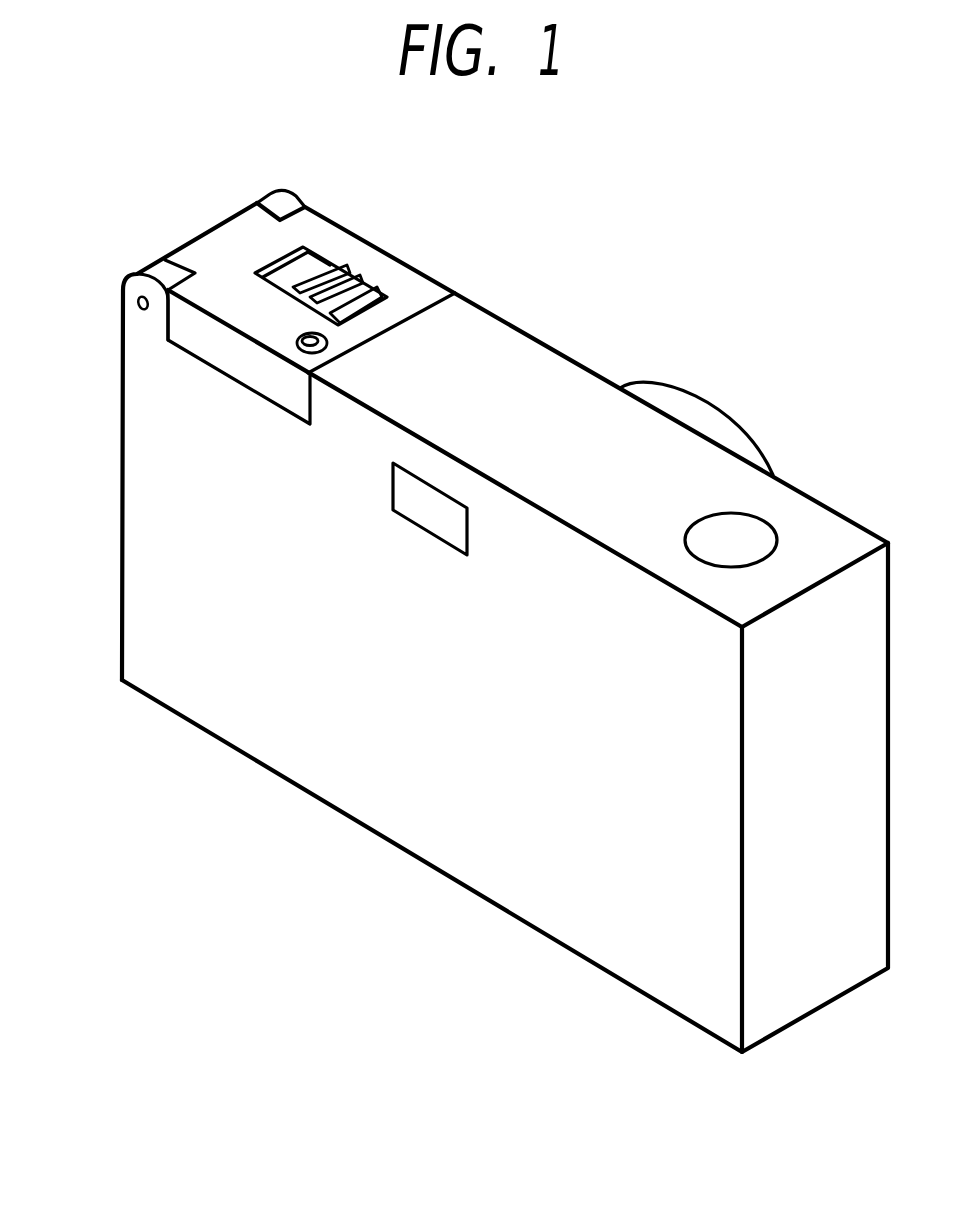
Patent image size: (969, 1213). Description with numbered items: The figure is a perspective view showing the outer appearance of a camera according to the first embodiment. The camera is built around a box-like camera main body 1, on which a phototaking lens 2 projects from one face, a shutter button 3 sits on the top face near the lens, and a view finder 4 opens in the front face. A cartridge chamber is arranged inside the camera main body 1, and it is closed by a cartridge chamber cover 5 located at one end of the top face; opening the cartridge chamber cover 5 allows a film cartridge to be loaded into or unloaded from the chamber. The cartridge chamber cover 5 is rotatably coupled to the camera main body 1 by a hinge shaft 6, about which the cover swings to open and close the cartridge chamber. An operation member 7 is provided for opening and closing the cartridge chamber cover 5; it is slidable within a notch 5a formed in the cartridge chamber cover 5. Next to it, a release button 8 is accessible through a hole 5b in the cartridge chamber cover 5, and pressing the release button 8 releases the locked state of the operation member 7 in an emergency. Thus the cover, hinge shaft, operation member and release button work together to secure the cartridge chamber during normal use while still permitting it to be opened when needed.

The camera main body 1 is at (167, 460).
The phototaking lens 2 is at (713, 403).
The shutter button 3 is at (760, 538).
The view finder 4 is at (440, 520).
The cartridge chamber cover 5 is at (377, 262).
The notch 5a is at (280, 263).
The hole 5b is at (297, 342).
The hinge shaft 6 is at (137, 302).
The operation member 7 is at (330, 262).
The release button 8 is at (297, 350).